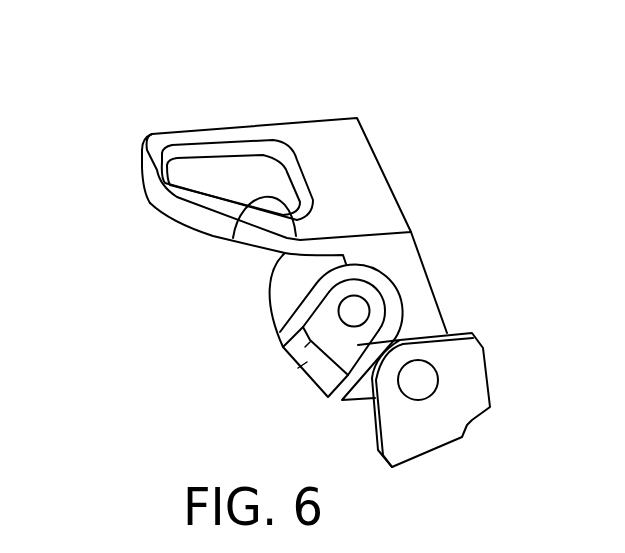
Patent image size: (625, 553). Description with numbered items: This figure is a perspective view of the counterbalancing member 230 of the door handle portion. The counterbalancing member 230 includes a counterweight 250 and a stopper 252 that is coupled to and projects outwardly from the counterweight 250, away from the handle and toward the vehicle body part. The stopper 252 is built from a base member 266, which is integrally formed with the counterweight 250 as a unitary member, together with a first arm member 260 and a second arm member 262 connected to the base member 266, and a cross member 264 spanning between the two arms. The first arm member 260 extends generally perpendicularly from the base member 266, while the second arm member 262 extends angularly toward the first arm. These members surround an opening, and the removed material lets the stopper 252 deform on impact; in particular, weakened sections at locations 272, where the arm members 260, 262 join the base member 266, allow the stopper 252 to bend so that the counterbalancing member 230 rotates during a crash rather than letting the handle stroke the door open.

The counterbalancing member 230 is at (345, 93).
The counterweight 250 is at (418, 288).
The stopper 252 is at (183, 220).
The first arm member 260 is at (418, 380).
The second arm member 262 is at (232, 145).
The cross member 264 is at (153, 172).
The base member 266 is at (208, 138).
The weakened section locations 272 is at (268, 138).